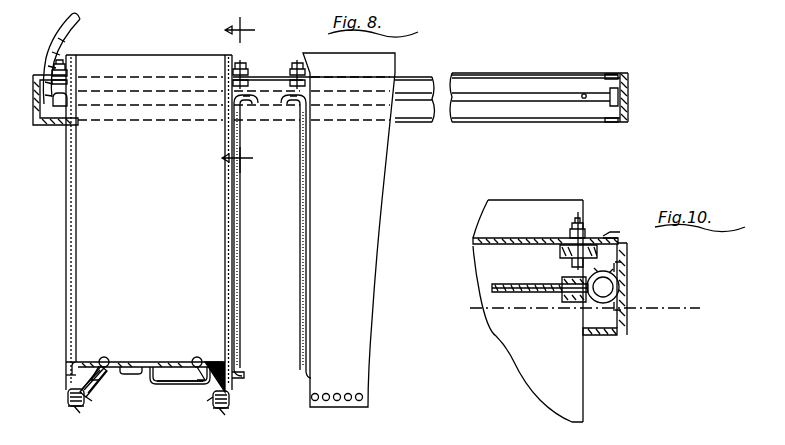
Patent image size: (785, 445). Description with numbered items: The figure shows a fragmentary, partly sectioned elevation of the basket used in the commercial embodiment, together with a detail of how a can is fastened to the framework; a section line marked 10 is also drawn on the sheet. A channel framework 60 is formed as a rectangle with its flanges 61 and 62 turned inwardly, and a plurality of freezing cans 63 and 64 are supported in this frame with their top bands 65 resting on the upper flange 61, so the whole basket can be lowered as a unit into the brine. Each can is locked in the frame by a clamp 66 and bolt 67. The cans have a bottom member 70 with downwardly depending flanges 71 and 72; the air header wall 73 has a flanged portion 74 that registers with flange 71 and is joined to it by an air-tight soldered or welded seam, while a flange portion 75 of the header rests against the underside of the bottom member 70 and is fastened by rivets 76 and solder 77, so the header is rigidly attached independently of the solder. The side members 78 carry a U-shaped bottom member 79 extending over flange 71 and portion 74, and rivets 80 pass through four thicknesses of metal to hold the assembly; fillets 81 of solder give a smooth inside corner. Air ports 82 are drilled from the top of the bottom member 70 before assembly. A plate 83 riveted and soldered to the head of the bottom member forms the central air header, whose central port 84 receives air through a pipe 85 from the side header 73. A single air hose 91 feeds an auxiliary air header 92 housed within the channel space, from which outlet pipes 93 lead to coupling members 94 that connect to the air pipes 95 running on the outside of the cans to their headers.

In FIG. 8, the section line 10 is at (244, 90).
In FIG. 8, the channel framework 60 is at (628, 78).
In FIG. 10, the channel framework 60 is at (629, 253).
In FIG. 8, the upper flange 61 is at (465, 74).
In FIG. 10, the upper flange 61 is at (604, 240).
In FIG. 8, the lower flange 62 is at (296, 64).
In FIG. 10, the lower flange 62 is at (609, 338).
In FIG. 8, the can 63 is at (78, 249).
In FIG. 10, the can 63 is at (522, 384).
In FIG. 8, the can 64 is at (378, 240).
In FIG. 8, the top band 65 is at (64, 60).
In FIG. 10, the top band 65 is at (480, 238).
In FIG. 10, the clamp 66 is at (562, 256).
In FIG. 10, the bolt 67 is at (586, 229).
In FIG. 8, the bottom member 70 is at (127, 362).
In FIG. 8, the flange 71 is at (68, 385).
In FIG. 8, the flange 72 is at (241, 376).
In FIG. 8, the air header wall 73 is at (92, 382).
In FIG. 8, the flanged portion 74 is at (82, 411).
In FIG. 8, the flange portion 75 is at (105, 357).
In FIG. 8, the rivet 76 is at (97, 360).
In FIG. 8, the solder 77 is at (165, 366).
In FIG. 8, the side member 78 is at (77, 270).
In FIG. 10, the side member 78 is at (585, 384).
In FIG. 8, the U-shaped bottom member 79 is at (76, 407).
In FIG. 8, the rivet 80 is at (351, 394).
In FIG. 8, the fillet 81 is at (90, 399).
In FIG. 8, the air port 82 is at (72, 360).
In FIG. 8, the plate 83 is at (140, 380).
In FIG. 8, the central port 84 is at (158, 360).
In FIG. 8, the pipe 85 is at (165, 388).
In FIG. 8, the air hose 91 is at (52, 36).
In FIG. 8, the auxiliary air header 92 is at (515, 98).
In FIG. 10, the auxiliary air header 92 is at (630, 301).
In FIG. 8, the outlet pipe 93 is at (582, 99).
In FIG. 10, the outlet pipe 93 is at (620, 286).
In FIG. 8, the coupling member 94 is at (290, 100).
In FIG. 10, the coupling member 94 is at (570, 302).
In FIG. 8, the air pipe 95 is at (66, 222).
In FIG. 10, the air pipe 95 is at (503, 293).